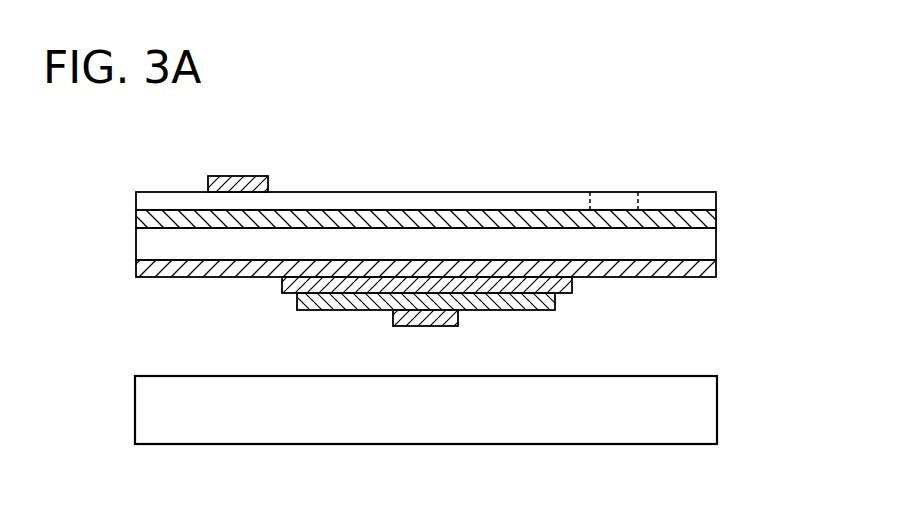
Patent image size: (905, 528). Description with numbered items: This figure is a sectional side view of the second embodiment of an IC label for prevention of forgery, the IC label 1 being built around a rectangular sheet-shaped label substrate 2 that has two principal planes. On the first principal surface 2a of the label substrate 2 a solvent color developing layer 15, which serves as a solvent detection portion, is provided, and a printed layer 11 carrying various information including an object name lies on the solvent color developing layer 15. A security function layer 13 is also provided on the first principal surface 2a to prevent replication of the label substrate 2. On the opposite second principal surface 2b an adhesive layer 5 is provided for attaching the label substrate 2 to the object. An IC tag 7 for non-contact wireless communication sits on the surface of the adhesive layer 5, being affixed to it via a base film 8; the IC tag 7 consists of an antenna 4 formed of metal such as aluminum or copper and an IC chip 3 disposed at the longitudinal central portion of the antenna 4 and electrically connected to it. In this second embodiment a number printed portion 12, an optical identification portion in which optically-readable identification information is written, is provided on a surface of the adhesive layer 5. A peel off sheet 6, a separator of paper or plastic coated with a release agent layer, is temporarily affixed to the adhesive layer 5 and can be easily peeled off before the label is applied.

The IC label 1 is at (536, 176).
The label substrate 2 is at (707, 253).
The first principal surface 2a is at (138, 222).
The second principal surface 2b is at (137, 268).
The IC chip 3 is at (458, 322).
The antenna 4 is at (555, 303).
The adhesive layer 5 is at (710, 278).
The peel off sheet 6 is at (685, 403).
The IC tag 7 is at (549, 325).
The base film 8 is at (572, 285).
The printed layer 11 is at (703, 203).
The number printed portion 12 is at (617, 202).
The security function layer 13 is at (227, 176).
The solvent color developing layer 15 is at (707, 223).